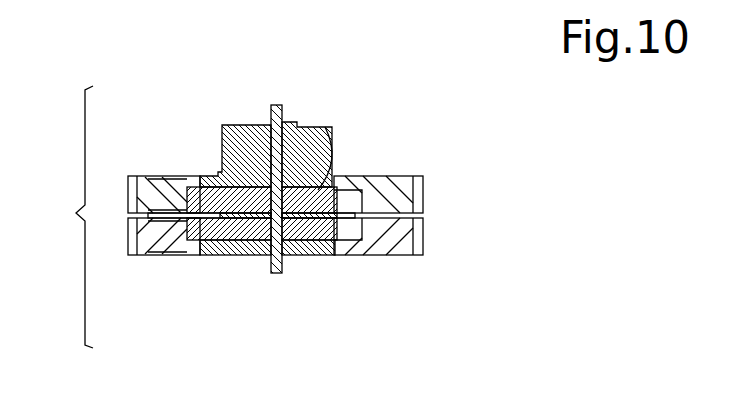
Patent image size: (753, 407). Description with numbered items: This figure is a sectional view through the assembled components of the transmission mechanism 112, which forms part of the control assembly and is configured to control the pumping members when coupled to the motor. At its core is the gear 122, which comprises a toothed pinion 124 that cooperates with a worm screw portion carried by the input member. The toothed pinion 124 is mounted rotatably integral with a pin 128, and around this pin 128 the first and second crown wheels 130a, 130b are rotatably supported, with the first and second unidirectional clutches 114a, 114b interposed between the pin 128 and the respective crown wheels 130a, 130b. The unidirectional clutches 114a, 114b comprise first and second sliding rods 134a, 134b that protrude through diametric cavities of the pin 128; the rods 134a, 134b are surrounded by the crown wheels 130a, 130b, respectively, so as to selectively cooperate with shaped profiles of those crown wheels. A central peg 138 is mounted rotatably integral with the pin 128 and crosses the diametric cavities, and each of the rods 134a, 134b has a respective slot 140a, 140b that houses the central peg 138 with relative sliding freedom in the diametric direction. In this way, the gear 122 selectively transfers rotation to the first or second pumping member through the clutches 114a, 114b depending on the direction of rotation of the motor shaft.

The transmission mechanism 112 is at (447, 145).
The first unidirectional clutch 114a is at (191, 253).
The second unidirectional clutch 114b is at (200, 185).
The gear 122 is at (55, 217).
The toothed pinion 124 is at (310, 125).
The pin 128 is at (322, 247).
The first crown wheel 130a is at (422, 233).
The second crown wheel 130b is at (422, 187).
The first sliding rod 134a is at (217, 247).
The second sliding rod 134b is at (320, 168).
The central peg 138 is at (279, 122).
The first slot 140a is at (254, 247).
The second slot 140b is at (248, 125).